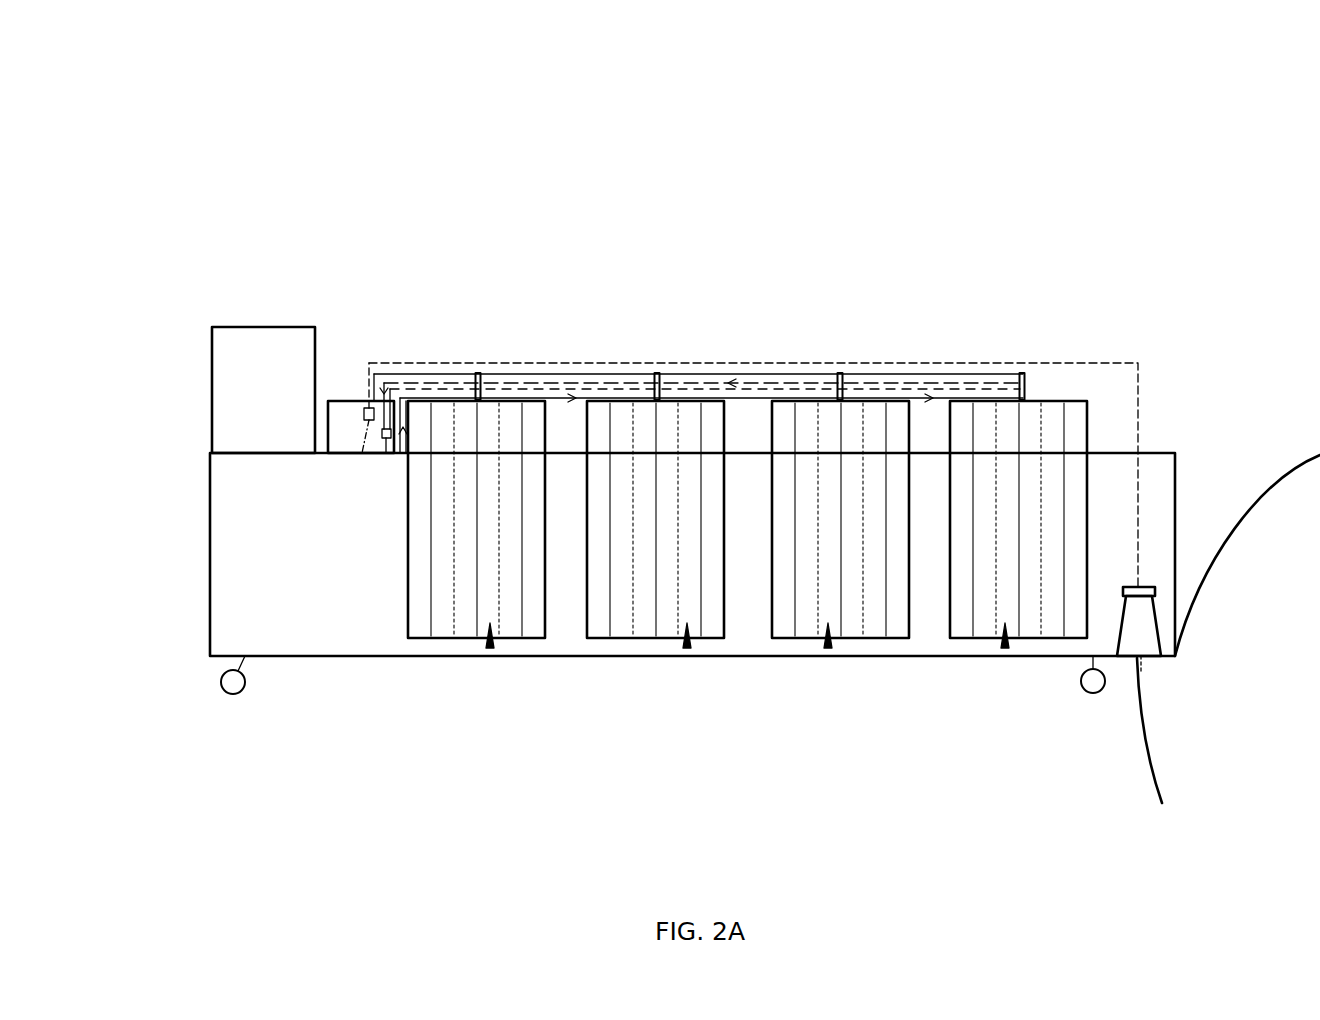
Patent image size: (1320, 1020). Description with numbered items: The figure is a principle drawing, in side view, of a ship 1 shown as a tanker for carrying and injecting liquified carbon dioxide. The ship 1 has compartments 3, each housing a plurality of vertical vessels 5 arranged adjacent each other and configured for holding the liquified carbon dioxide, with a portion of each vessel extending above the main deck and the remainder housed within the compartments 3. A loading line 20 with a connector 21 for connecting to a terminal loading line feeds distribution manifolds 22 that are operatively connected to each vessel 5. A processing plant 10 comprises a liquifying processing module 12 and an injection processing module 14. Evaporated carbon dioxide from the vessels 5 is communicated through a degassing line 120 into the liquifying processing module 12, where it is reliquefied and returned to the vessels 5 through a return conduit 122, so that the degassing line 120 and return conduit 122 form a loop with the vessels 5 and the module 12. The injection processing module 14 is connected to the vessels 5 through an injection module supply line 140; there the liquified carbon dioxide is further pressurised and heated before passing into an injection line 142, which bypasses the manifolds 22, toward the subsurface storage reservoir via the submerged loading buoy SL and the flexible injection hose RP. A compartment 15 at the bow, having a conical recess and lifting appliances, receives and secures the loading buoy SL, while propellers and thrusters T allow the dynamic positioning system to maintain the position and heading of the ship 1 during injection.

The ship 1 is at (268, 186).
The processing plant 10 is at (340, 360).
The liquifying processing module 12 is at (387, 453).
The injection processing module 14 is at (362, 453).
The loading line 20 is at (698, 304).
The connector 21 is at (400, 453).
The distribution manifolds 22 is at (484, 373).
The degassing line 120 is at (750, 384).
The return conduit 122 is at (788, 391).
The injection module supply line 140 is at (932, 373).
The injection line 142 is at (1088, 365).
The compartment 3 is at (585, 617).
The vertical vessel 5 is at (1005, 763).
The compartment 15 is at (1137, 623).
The propellers and thrusters T is at (241, 692).
The submerged loading buoy SL is at (1147, 672).
The flexible injection hose RP is at (1150, 748).